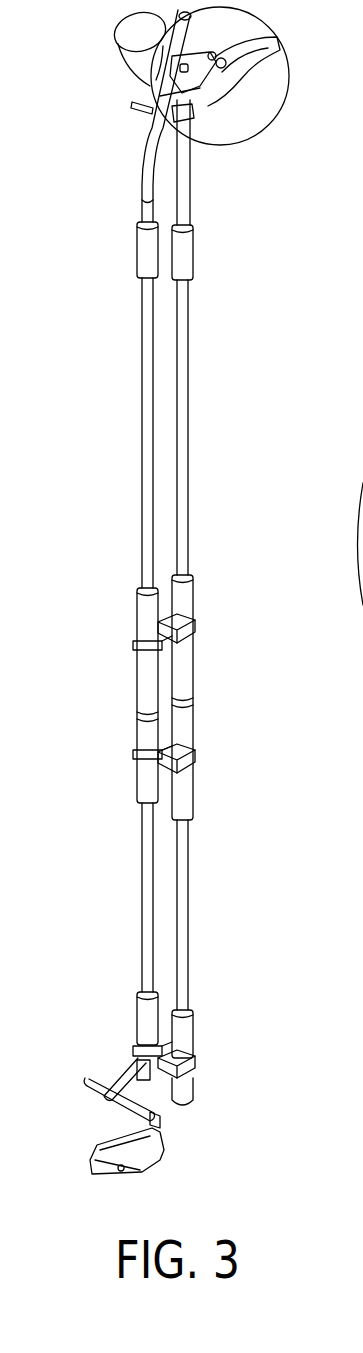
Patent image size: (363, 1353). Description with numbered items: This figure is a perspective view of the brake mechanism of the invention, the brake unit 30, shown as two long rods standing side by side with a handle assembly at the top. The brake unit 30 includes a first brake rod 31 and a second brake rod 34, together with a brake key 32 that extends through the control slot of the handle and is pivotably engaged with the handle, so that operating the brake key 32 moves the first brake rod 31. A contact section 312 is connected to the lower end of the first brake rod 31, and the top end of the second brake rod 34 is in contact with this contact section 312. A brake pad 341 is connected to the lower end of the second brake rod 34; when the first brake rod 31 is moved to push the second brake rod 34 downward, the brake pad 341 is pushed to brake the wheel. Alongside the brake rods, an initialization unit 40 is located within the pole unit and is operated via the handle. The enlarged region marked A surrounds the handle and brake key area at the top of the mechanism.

The brake unit 30 is at (215, 450).
The first brake rod 31 is at (190, 327).
The contact section 312 is at (187, 672).
The brake key 32 is at (248, 50).
The second brake rod 34 is at (188, 920).
The brake pad 341 is at (187, 1087).
The initialization unit 40 is at (145, 498).
The detail region A is at (284, 98).